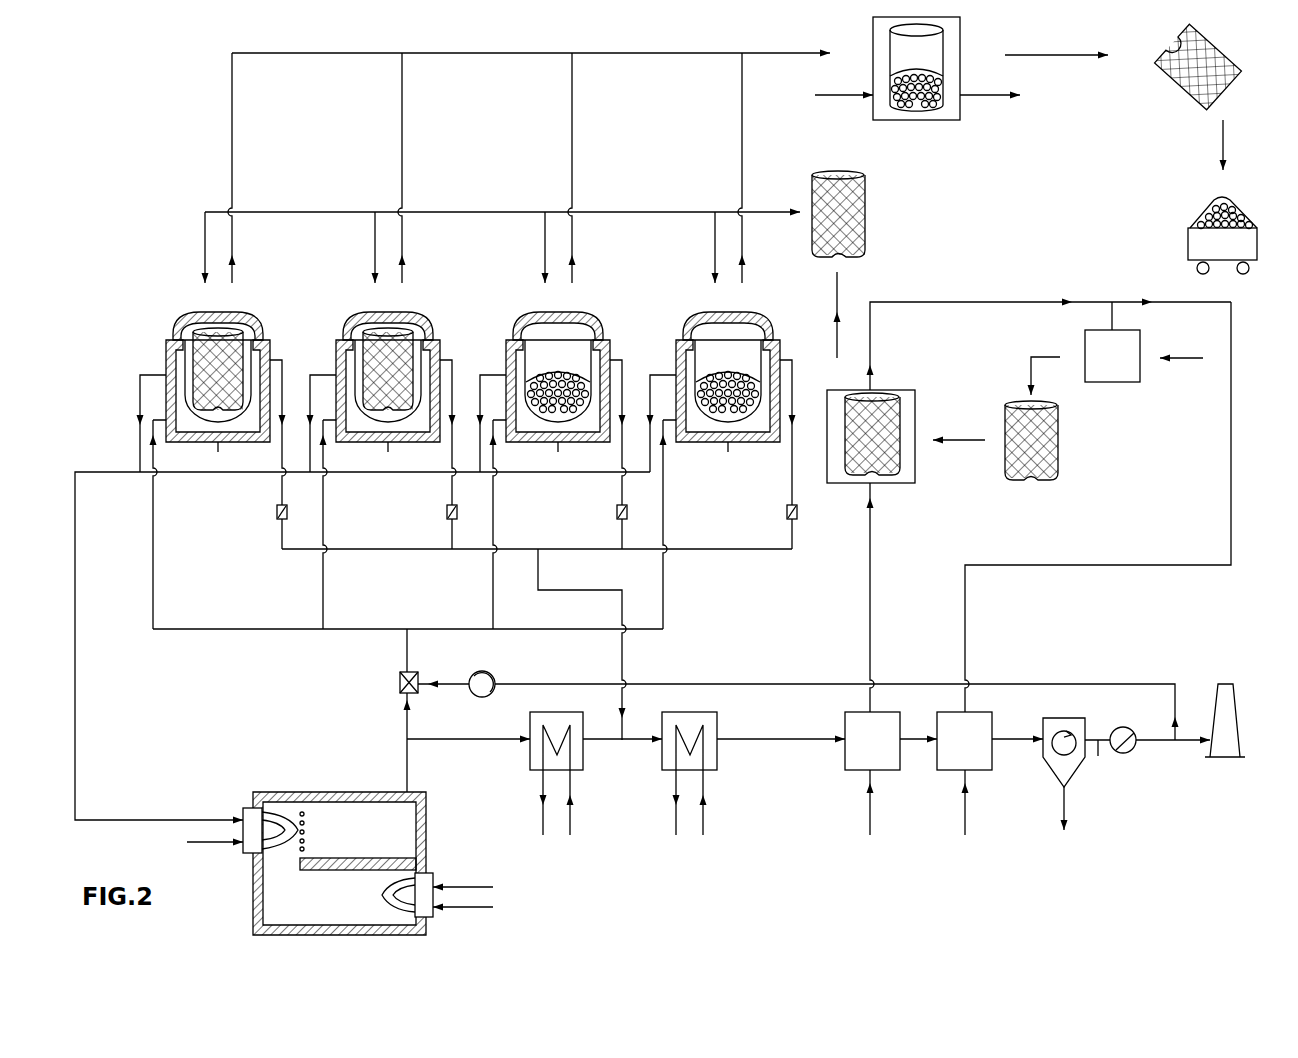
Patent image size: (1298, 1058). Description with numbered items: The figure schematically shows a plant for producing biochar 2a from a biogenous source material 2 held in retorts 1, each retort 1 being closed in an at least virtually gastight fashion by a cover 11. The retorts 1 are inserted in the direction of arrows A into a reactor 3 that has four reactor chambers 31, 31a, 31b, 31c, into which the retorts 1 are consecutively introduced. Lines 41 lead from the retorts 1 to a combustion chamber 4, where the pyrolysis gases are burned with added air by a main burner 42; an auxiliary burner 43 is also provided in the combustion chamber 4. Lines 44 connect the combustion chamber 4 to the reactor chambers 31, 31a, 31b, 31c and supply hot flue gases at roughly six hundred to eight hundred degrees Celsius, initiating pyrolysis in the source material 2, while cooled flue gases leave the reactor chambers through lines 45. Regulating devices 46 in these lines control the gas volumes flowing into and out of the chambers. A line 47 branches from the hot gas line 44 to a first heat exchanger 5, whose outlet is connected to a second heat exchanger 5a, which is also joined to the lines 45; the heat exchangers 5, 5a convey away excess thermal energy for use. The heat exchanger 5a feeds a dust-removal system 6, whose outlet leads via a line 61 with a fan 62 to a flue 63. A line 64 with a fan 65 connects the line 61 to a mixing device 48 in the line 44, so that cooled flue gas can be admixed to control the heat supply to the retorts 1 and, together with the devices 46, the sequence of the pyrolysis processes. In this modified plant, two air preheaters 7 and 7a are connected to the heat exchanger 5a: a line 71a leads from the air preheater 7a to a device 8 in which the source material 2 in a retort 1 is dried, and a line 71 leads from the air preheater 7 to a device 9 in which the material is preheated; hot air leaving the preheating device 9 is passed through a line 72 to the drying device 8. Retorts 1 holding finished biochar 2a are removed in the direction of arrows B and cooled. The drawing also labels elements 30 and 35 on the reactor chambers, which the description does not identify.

The retort 1 is at (242, 370).
The biogenous source material 2 is at (222, 380).
The biochar 2a is at (557, 372).
The reactor 3 is at (470, 285).
The combustion chamber 4 is at (426, 822).
The first heat exchanger 5 is at (528, 766).
The second heat exchanger 5a is at (661, 766).
The dust-removal system 6 is at (1052, 767).
The air preheater 7 is at (877, 745).
The air preheater 7a is at (976, 745).
The drying device 8 is at (1118, 366).
The preheating device 9 is at (917, 472).
The cover 11 is at (238, 333).
The furnace 30 is at (472, 454).
The reactor chamber 31 is at (272, 343).
The reactor chamber 31a is at (442, 343).
The reactor chamber 31b is at (612, 343).
The reactor chamber 31c is at (782, 343).
The furnace cover 35 is at (176, 327).
The line 41 is at (141, 408).
The main burner 42 is at (305, 829).
The auxiliary burner 43 is at (381, 898).
The line 44 is at (155, 458).
The line 45 is at (280, 458).
The regulating device 46 is at (276, 512).
The line 47 is at (461, 737).
The mixing device 48 is at (398, 684).
The line 61 is at (1097, 761).
The fan 62 is at (1128, 754).
The flue 63 is at (1240, 728).
The line 64 is at (1062, 682).
The fan 65 is at (495, 675).
The line 71 is at (872, 550).
The line 71a is at (1081, 565).
The line 72 is at (966, 300).